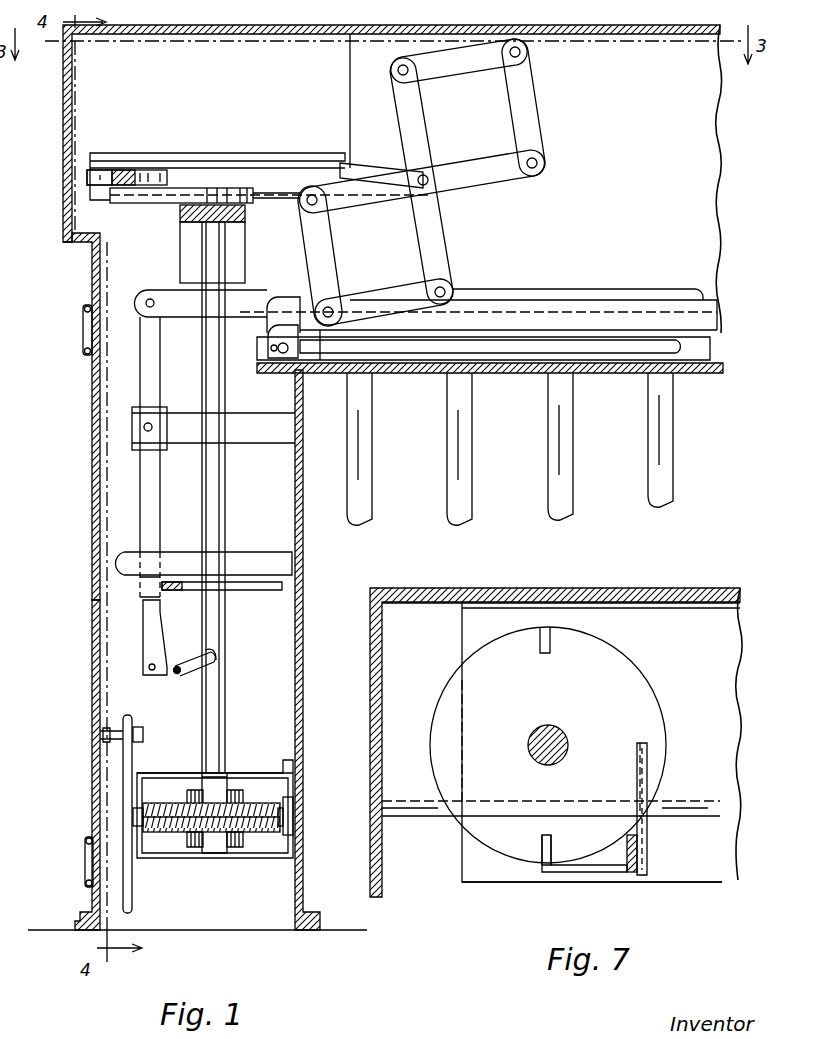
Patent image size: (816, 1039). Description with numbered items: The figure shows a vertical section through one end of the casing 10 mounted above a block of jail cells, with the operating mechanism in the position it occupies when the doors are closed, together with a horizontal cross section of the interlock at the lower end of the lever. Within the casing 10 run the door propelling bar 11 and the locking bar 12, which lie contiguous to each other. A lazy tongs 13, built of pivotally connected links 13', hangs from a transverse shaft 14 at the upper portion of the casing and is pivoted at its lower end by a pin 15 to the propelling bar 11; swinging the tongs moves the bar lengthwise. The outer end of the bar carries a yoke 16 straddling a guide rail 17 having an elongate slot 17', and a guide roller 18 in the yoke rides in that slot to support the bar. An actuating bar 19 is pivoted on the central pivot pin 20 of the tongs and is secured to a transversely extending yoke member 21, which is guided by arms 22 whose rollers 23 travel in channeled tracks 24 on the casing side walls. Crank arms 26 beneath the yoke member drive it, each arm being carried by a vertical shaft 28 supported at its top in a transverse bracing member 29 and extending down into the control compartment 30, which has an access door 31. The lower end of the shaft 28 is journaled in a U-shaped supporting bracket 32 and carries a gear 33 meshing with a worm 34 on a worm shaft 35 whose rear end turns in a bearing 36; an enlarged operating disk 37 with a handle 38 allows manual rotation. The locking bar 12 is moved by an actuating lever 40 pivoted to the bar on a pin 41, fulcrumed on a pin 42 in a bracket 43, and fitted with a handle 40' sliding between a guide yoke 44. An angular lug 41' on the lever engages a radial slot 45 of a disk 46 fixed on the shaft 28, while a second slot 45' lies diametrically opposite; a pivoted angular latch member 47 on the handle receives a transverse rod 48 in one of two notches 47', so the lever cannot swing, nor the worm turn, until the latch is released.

In FIG. 1, the casing 10 is at (597, 34).
In FIG. 1, the door propelling bar 11 is at (710, 305).
In FIG. 1, the door locking bar 12 is at (620, 292).
In FIG. 1, the lazy tongs 13 is at (423, 237).
In FIG. 1, the links 13' is at (483, 171).
In FIG. 1, the transverse shaft 14 is at (522, 52).
In FIG. 1, the pin 15 is at (325, 374).
In FIG. 1, the yoke 16 is at (262, 322).
In FIG. 1, the guide rail 17 is at (483, 431).
In FIG. 1, the elongate slot 17' is at (490, 377).
In FIG. 1, the guide roller 18 is at (253, 360).
In FIG. 1, the actuating bar 19 is at (362, 168).
In FIG. 1, the central pivot pin 20 is at (423, 176).
In FIG. 1, the yoke member 21 is at (150, 172).
In FIG. 1, the arms 22 is at (125, 172).
In FIG. 1, the rollers 23 is at (103, 170).
In FIG. 1, the channeled tracks 24 is at (286, 154).
In FIG. 1, the crank arms 26 is at (205, 190).
In FIG. 1, the vertical shaft 28 is at (212, 258).
In FIG. 7, the vertical shaft 28 is at (530, 745).
In FIG. 1, the transverse bracing member 29 is at (178, 216).
In FIG. 1, the control compartment 30 is at (115, 376).
In FIG. 1, the door 31 is at (96, 814).
In FIG. 1, the U-shaped supporting bracket 32 is at (172, 858).
In FIG. 7, the U-shaped supporting bracket 32 is at (480, 866).
In FIG. 1, the gear 33 is at (258, 834).
In FIG. 1, the worm 34 is at (193, 792).
In FIG. 1, the worm shaft 35 is at (275, 776).
In FIG. 1, the bearing 36 is at (291, 814).
In FIG. 1, the operating disk 37 is at (125, 760).
In FIG. 1, the handle 38 is at (105, 733).
In FIG. 1, the actuating lever 40 is at (95, 457).
In FIG. 1, the handle 40' is at (105, 637).
In FIG. 7, the handle 40' is at (630, 826).
In FIG. 1, the pin 41 is at (196, 285).
In FIG. 7, the angular lug 41' is at (570, 874).
In FIG. 1, the pin 42 is at (148, 423).
In FIG. 1, the bracket 43 is at (240, 434).
In FIG. 1, the guide yoke 44 is at (190, 560).
In FIG. 1, the radial slot 45 is at (178, 599).
In FIG. 7, the radial slot 45 is at (528, 843).
In FIG. 7, the second slot 45' is at (594, 637).
In FIG. 1, the disk 46 is at (240, 590).
In FIG. 7, the disk 46 is at (640, 696).
In FIG. 1, the angular latch member 47 is at (171, 696).
In FIG. 7, the angular latch member 47 is at (663, 853).
In FIG. 1, the notches 47' is at (192, 655).
In FIG. 1, the transverse rod 48 is at (214, 668).
In FIG. 7, the transverse rod 48 is at (668, 808).